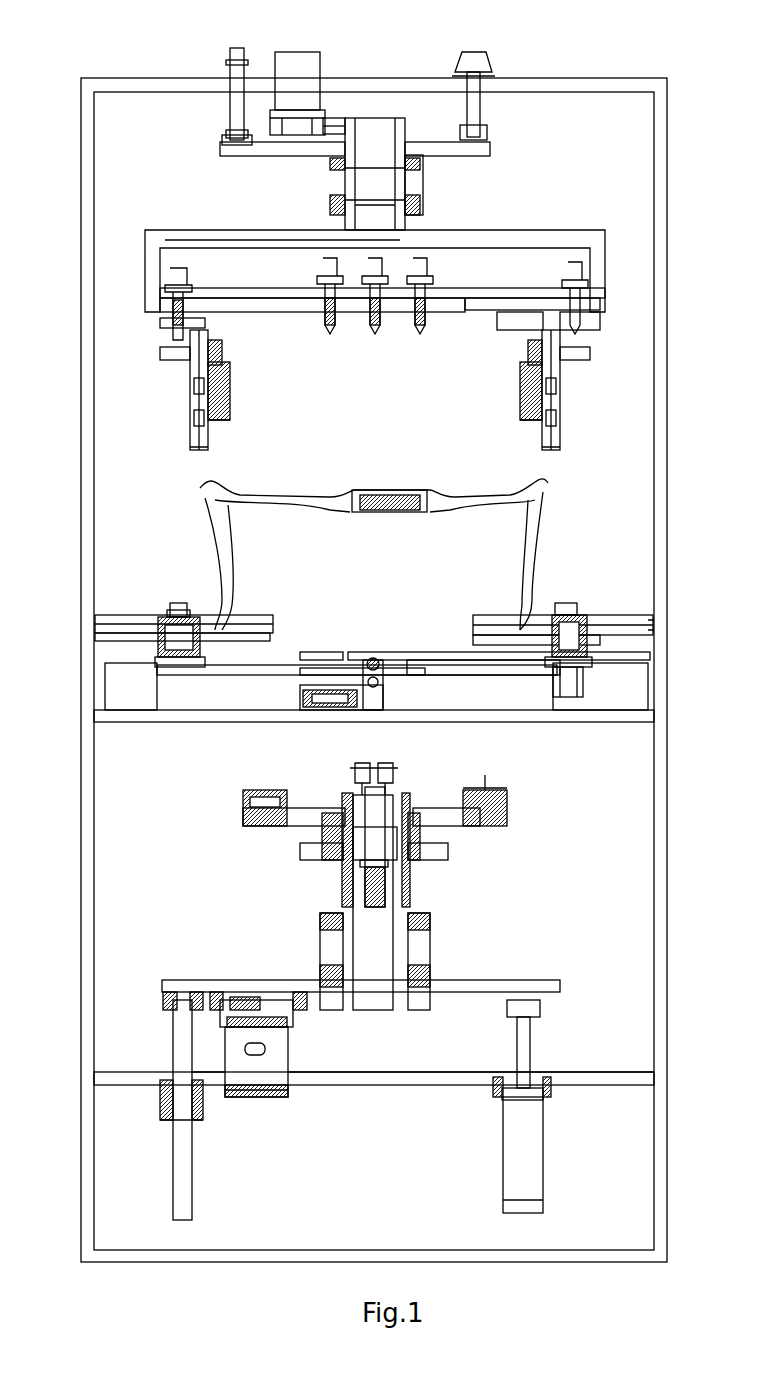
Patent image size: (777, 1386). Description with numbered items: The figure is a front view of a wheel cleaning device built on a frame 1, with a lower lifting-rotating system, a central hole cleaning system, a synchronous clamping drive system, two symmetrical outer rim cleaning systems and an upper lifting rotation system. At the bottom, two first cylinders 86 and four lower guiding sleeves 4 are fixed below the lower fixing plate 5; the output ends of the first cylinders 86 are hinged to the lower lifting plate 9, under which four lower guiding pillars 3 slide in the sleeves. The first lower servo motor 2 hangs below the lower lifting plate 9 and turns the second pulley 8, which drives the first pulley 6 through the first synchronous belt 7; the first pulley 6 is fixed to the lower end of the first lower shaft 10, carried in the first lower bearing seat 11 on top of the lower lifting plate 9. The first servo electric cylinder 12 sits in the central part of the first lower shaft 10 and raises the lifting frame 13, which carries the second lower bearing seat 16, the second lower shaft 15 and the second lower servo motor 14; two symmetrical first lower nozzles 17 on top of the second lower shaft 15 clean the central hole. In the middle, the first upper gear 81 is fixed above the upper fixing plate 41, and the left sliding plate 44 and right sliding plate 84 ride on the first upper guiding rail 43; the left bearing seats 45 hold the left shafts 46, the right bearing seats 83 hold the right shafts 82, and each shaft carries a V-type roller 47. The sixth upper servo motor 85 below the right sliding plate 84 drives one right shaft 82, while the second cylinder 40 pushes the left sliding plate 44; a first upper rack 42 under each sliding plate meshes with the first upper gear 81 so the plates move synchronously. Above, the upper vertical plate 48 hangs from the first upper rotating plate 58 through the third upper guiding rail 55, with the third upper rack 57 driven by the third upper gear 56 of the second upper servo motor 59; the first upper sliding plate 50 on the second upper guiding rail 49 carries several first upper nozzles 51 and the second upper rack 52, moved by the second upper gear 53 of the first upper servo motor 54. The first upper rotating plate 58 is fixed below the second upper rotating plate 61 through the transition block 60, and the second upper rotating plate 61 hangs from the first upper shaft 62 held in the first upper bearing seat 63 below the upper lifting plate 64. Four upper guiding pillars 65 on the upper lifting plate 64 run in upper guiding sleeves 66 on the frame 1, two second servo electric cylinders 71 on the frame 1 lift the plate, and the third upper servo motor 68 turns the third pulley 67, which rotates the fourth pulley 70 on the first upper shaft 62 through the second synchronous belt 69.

The frame 1 is at (90, 1215).
The first lower servo motor 2 is at (260, 1077).
The lower guiding pillar 3 is at (170, 1107).
The lower guiding sleeve 4 is at (185, 1082).
The lower fixing plate 5 is at (240, 1085).
The first pulley 6 is at (228, 1045).
The first synchronous belt 7 is at (250, 1025).
The second pulley 8 is at (220, 1010).
The lower lifting plate 9 is at (230, 1000).
The first lower shaft 10 is at (325, 975).
The first lower bearing seat 11 is at (330, 935).
The first servo electric cylinder 12 is at (365, 895).
The lifting frame 13 is at (353, 863).
The second lower servo motor 14 is at (303, 850).
The second lower shaft 15 is at (322, 827).
The second lower bearing seat 16 is at (265, 810).
The first lower nozzle 17 is at (355, 770).
The second cylinder 40 is at (330, 690).
The upper fixing plate 41 is at (170, 750).
The first upper rack 42 is at (260, 714).
The first upper guiding rail 43 is at (320, 685).
The left sliding plate 44 is at (227, 677).
The left bearing seat 45 is at (173, 665).
The left shaft 46 is at (157, 633).
The V-type roller 47 is at (170, 610).
The upper vertical plate 48 is at (185, 472).
The second upper guiding rail 49 is at (193, 448).
The first upper sliding plate 50 is at (193, 437).
The first upper nozzle 51 is at (193, 407).
The second upper rack 52 is at (197, 385).
The second upper gear 53 is at (218, 372).
The first upper servo motor 54 is at (210, 365).
The third upper guiding rail 55 is at (203, 360).
The third upper gear 56 is at (193, 340).
The third upper rack 57 is at (188, 325).
The first upper rotating plate 58 is at (207, 302).
The second upper servo motor 59 is at (170, 280).
The transition block 60 is at (150, 262).
The second upper rotating plate 61 is at (225, 240).
The first upper shaft 62 is at (385, 205).
The first upper bearing seat 63 is at (338, 198).
The upper lifting plate 64 is at (336, 165).
The upper guiding pillar 65 is at (238, 142).
The upper guiding sleeve 66 is at (228, 65).
The third pulley 67 is at (260, 47).
The third upper servo motor 68 is at (298, 52).
The second synchronous belt 69 is at (330, 118).
The fourth pulley 70 is at (403, 118).
The second servo electric cylinder 71 is at (472, 55).
The first upper gear 81 is at (373, 660).
The right shaft 82 is at (520, 613).
The right bearing seat 83 is at (600, 625).
The right sliding plate 84 is at (560, 645).
The sixth upper servo motor 85 is at (573, 675).
The first cylinder 86 is at (527, 1127).